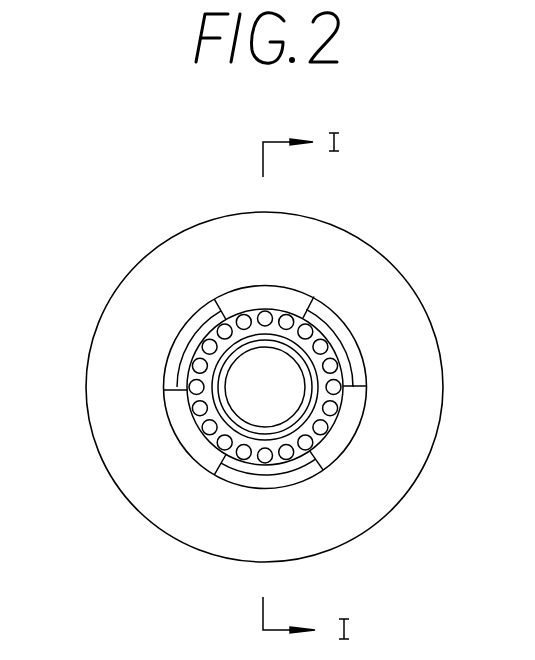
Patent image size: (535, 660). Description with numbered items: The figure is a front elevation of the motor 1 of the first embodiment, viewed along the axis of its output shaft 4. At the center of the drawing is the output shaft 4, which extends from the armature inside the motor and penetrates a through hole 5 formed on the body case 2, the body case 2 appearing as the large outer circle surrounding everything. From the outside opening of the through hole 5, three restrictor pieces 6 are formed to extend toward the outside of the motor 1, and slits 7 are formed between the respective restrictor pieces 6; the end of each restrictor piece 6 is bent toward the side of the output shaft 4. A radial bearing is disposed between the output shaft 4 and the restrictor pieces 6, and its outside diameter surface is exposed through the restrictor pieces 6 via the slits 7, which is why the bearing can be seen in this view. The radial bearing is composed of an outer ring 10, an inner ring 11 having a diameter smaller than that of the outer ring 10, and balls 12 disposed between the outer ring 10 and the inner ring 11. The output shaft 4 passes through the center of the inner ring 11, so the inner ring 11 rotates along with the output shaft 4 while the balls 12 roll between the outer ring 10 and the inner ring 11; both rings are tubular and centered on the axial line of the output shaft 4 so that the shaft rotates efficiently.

The motor 1 is at (210, 197).
The body case 2 is at (133, 267).
The output shaft 4 is at (291, 385).
The through hole 5 is at (333, 320).
The restrictor piece 6 is at (258, 297).
The slit 7 is at (208, 300).
The outer ring 10 is at (172, 400).
The inner ring 11 is at (217, 369).
The balls 12 is at (317, 442).